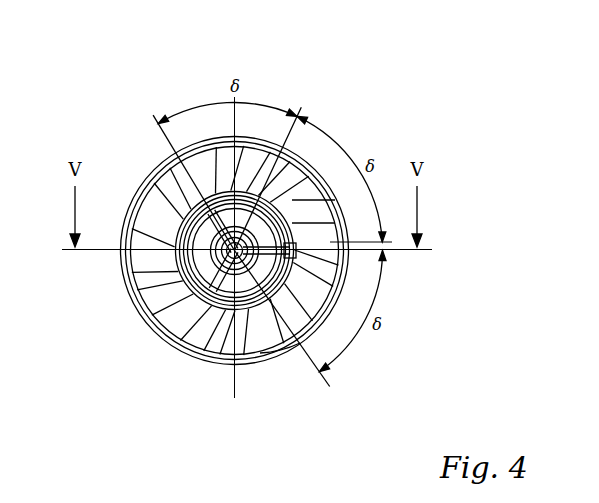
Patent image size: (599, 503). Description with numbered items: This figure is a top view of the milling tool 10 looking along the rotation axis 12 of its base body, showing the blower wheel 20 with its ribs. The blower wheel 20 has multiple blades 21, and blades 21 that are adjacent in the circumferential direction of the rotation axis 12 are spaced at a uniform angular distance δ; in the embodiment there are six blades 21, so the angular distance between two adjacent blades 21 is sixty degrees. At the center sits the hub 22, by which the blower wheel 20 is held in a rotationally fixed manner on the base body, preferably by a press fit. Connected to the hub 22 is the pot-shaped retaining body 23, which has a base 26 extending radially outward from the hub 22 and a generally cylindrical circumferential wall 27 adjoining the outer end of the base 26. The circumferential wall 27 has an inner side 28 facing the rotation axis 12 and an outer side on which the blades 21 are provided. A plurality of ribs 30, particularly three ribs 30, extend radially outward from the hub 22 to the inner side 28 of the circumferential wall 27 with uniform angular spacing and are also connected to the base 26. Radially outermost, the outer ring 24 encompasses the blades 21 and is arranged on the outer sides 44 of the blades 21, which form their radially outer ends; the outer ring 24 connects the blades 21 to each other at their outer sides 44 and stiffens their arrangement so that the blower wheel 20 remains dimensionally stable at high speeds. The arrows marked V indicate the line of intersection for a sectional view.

The milling tool 10 is at (143, 107).
The rotation axis 12 is at (162, 343).
The blower wheel 20 is at (170, 350).
The blades 21 is at (255, 160).
The hub 22 is at (252, 340).
The retaining body 23 is at (176, 255).
The outer ring 24 is at (278, 353).
The base 26 is at (176, 238).
The circumferential wall 27 is at (202, 296).
The inner side 28 is at (184, 283).
The ribs 30 is at (180, 222).
The outer side 44 is at (186, 216).